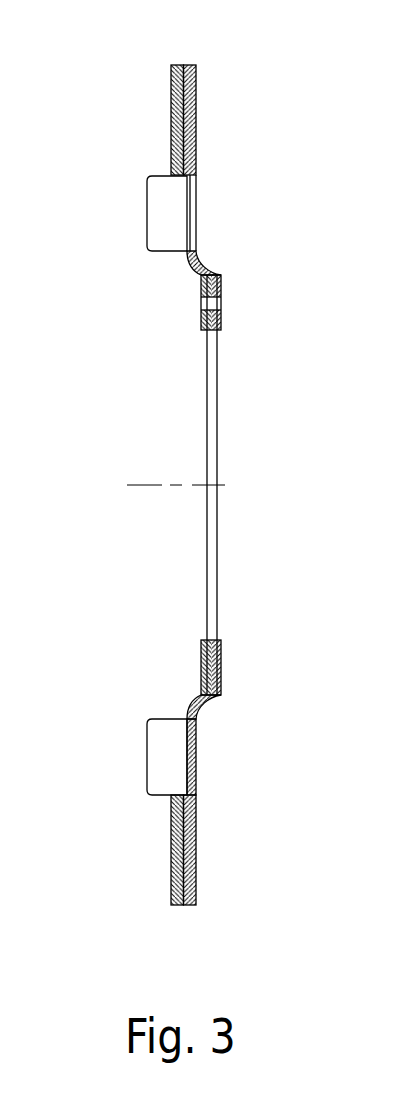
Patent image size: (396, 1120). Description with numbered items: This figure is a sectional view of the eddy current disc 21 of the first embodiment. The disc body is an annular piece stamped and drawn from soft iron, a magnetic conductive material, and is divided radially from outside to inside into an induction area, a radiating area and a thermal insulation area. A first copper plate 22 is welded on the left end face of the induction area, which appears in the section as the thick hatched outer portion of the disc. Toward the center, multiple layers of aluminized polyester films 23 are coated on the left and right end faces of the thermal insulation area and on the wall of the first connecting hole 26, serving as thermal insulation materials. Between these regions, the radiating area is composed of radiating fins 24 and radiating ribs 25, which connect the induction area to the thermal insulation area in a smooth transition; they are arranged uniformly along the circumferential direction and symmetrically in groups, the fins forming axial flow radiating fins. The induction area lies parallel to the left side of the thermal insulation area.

The eddy current disc 21 is at (212, 167).
The first copper plate 22 is at (172, 120).
The aluminized polyester films 23 is at (203, 290).
The radiating fins 24 is at (147, 213).
The radiating ribs 25 is at (196, 215).
The first connecting hole 26 is at (218, 293).